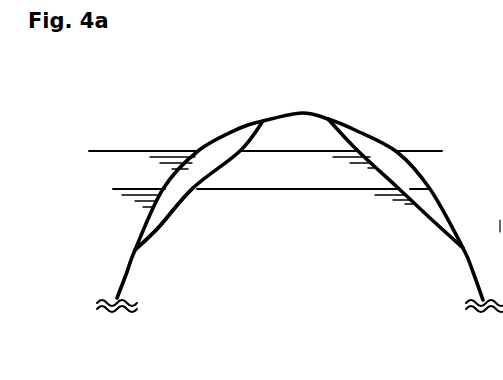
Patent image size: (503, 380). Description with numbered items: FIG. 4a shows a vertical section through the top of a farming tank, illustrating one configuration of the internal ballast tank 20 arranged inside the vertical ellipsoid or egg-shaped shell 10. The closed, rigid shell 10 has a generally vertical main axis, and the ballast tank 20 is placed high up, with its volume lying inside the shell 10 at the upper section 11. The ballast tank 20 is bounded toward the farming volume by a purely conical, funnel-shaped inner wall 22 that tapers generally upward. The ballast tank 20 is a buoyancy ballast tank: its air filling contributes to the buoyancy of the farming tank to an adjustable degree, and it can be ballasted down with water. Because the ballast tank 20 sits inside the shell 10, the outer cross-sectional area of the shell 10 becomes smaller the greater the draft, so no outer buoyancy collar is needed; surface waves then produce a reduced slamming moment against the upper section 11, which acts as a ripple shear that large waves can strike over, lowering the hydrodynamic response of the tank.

The shell 10 is at (152, 213).
The upper section 11 is at (212, 101).
The ballast tank 20 is at (168, 192).
The inner wall 22 is at (158, 228).